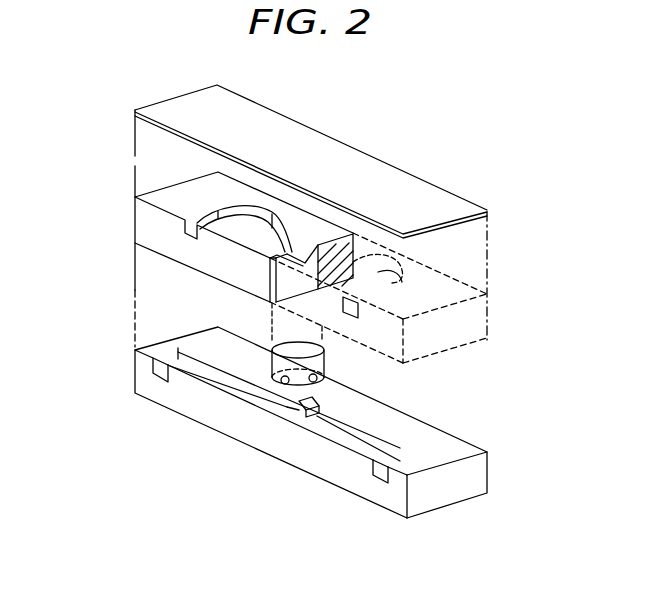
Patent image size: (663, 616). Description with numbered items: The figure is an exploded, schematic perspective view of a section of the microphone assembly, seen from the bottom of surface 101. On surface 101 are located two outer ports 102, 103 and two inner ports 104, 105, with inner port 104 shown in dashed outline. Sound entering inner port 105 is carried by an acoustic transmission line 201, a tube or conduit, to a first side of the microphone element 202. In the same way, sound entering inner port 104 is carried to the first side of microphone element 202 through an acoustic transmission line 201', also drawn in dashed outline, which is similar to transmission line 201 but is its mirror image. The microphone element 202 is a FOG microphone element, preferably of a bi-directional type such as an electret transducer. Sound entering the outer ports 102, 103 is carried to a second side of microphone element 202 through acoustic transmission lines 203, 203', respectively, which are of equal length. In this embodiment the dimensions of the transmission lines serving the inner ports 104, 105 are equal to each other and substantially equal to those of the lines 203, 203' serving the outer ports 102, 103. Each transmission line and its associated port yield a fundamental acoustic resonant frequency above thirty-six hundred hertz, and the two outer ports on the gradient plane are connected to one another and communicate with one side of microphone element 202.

The surface 101 is at (273, 443).
The outer port 102 is at (377, 488).
The outer port 103 is at (141, 380).
The inner port 104 is at (354, 308).
The inner port 105 is at (185, 235).
The acoustic transmission line 201 is at (284, 183).
The acoustic transmission line 201' is at (403, 218).
The microphone element 202 is at (325, 357).
The acoustic transmission line 203 is at (343, 475).
The acoustic transmission line 203' is at (257, 421).